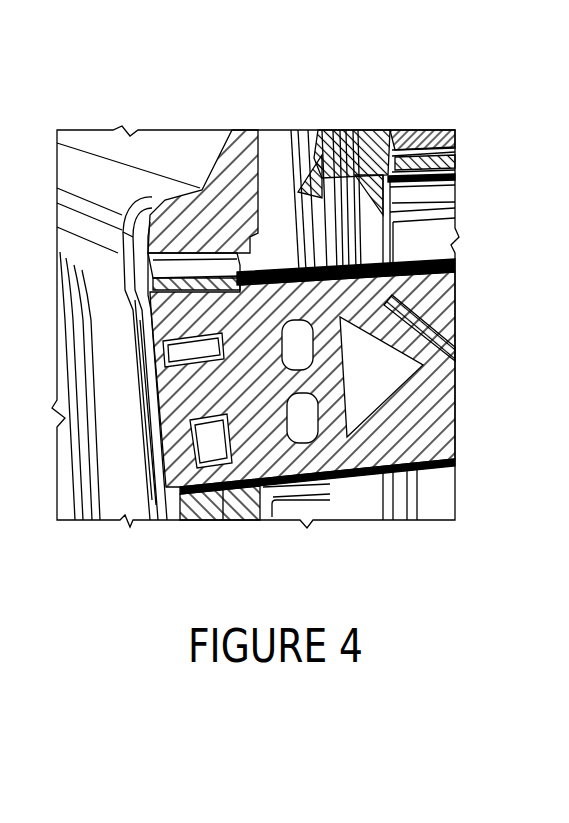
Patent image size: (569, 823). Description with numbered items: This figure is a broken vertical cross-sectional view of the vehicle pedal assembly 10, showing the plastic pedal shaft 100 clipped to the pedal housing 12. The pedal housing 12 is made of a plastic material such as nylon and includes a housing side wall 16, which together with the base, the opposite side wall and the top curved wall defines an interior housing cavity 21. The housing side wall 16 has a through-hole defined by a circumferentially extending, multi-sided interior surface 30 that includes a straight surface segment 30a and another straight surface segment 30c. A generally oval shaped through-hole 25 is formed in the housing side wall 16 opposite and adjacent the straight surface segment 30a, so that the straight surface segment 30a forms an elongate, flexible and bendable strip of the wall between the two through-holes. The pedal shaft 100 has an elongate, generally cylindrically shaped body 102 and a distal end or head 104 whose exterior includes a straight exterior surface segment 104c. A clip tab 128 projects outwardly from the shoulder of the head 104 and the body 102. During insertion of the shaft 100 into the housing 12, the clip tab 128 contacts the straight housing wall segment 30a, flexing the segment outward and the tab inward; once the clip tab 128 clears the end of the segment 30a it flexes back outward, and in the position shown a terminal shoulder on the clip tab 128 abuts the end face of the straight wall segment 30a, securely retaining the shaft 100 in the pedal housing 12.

The vehicle pedal assembly 10 is at (296, 110).
The pedal housing 12 is at (182, 150).
The housing side wall 16 is at (205, 200).
The interior housing cavity 21 is at (420, 247).
The oval shaped through-hole 25 is at (200, 256).
The multi-sided interior surface 30 is at (175, 495).
The straight surface segment 30a is at (197, 258).
The straight surface segment 30c is at (175, 495).
The pedal shaft 100 is at (458, 253).
The body 102 is at (368, 218).
The distal end or head 104 is at (167, 400).
The straight exterior surface segment 104c is at (224, 492).
The clip tab 128 is at (255, 282).